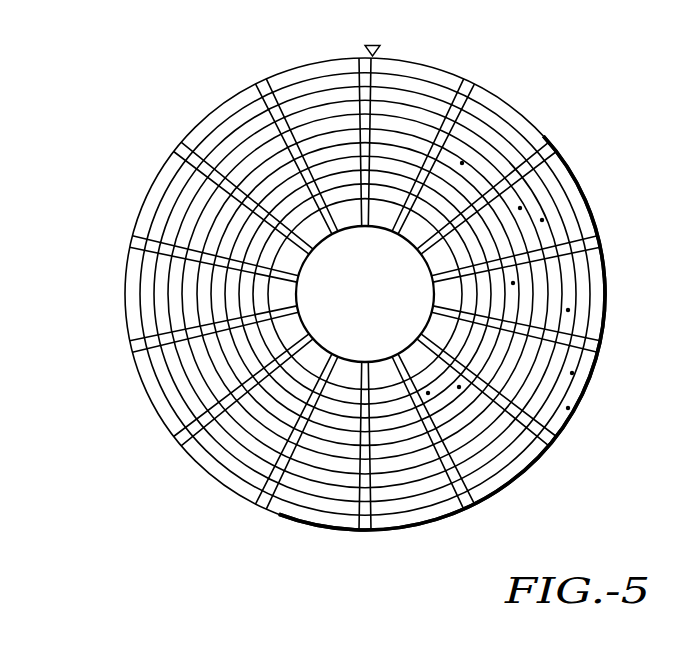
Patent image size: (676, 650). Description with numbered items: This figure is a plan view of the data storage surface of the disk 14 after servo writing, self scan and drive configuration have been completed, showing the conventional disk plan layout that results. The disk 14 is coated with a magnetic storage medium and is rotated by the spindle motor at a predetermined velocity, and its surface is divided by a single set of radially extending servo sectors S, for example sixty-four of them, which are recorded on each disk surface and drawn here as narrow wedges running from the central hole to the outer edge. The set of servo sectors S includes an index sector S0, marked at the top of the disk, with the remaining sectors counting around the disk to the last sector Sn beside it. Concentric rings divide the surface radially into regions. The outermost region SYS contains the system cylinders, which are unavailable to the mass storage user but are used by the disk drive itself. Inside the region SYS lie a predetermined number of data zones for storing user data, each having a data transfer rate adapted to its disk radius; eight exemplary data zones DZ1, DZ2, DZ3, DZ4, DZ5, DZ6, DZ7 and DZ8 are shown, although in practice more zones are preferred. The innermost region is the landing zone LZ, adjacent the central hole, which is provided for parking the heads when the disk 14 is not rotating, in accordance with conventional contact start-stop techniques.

The data storage disk 14 is at (155, 490).
The servo sectors S is at (183, 151).
The index sector S0 is at (365, 60).
The servo sector Sn is at (263, 87).
The landing zone region LZ is at (433, 375).
The system cylinders region SYS is at (568, 408).
The data zone DZ1 is at (572, 373).
The data zone DZ2 is at (568, 310).
The data zone DZ3 is at (542, 220).
The data zone DZ4 is at (520, 208).
The data zone DZ5 is at (462, 163).
The data zone DZ6 is at (513, 283).
The data zone DZ7 is at (523, 475).
The data zone DZ8 is at (488, 487).